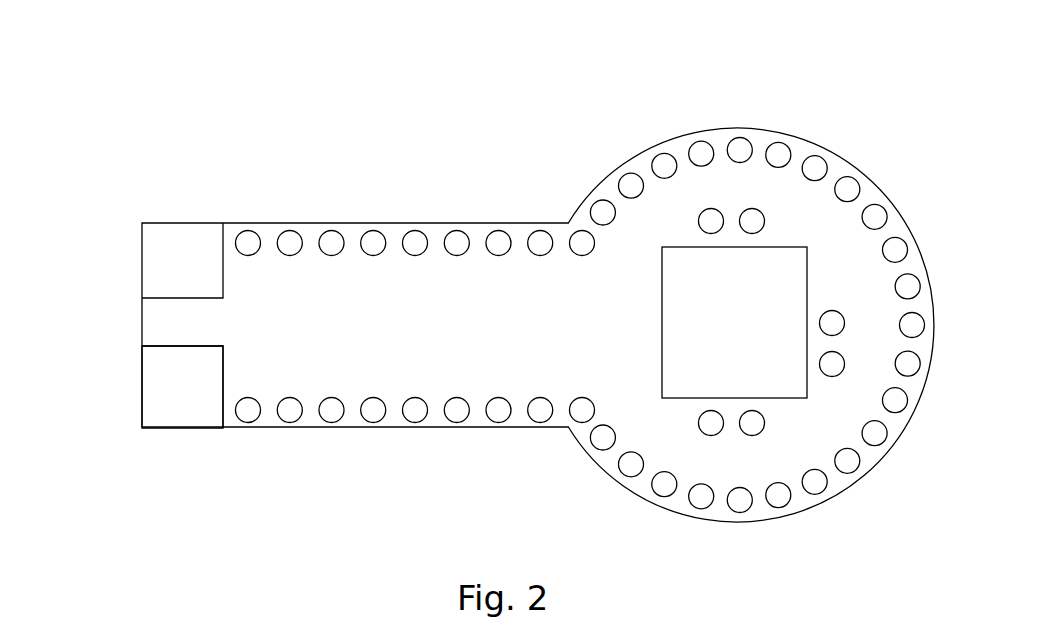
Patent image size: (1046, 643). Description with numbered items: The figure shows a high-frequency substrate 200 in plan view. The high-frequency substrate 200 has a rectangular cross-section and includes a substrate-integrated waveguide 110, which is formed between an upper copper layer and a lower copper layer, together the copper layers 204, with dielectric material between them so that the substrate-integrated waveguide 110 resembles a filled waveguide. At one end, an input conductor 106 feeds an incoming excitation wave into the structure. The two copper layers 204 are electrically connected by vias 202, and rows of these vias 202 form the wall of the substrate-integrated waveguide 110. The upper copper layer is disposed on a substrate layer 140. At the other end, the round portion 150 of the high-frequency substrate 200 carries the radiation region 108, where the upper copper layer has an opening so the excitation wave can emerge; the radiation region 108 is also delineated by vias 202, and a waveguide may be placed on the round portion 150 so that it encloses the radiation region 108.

The high-frequency substrate 200 is at (442, 215).
The round portion 150 is at (930, 118).
The vias 202 is at (815, 480).
The radiation region 108 is at (693, 383).
The input conductor 106 is at (182, 325).
The substrate layer 140 is at (175, 402).
The substrate-integrated waveguide 110 is at (247, 438).
The copper layers 204 is at (447, 357).